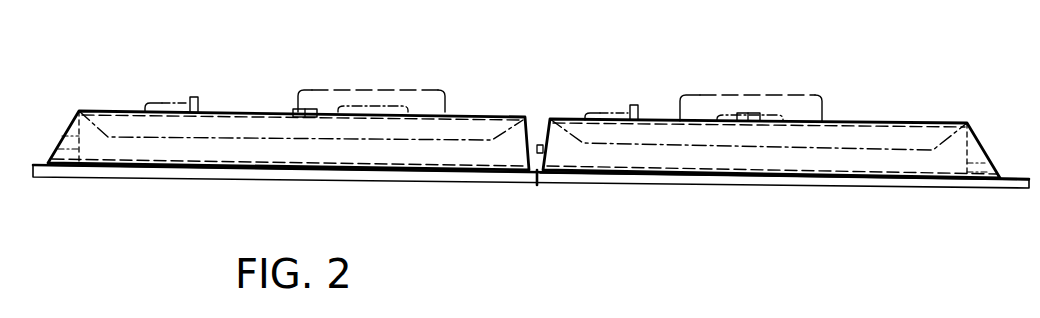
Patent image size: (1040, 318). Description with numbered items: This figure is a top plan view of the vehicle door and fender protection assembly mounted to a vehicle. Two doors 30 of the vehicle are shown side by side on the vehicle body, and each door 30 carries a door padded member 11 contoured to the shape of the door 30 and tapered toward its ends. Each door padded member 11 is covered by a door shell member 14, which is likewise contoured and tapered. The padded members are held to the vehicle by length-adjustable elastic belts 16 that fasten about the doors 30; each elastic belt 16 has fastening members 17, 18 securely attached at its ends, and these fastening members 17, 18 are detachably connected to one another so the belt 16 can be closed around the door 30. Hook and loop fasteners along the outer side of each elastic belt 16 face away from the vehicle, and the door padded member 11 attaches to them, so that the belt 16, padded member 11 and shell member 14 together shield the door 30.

The door padded member 11 is at (130, 170).
The door shell member 14 is at (733, 185).
The length-adjustable elastic belt 16 is at (227, 112).
The fastening member 17 is at (300, 110).
The fastening member 18 is at (317, 112).
The door 30 is at (108, 125).